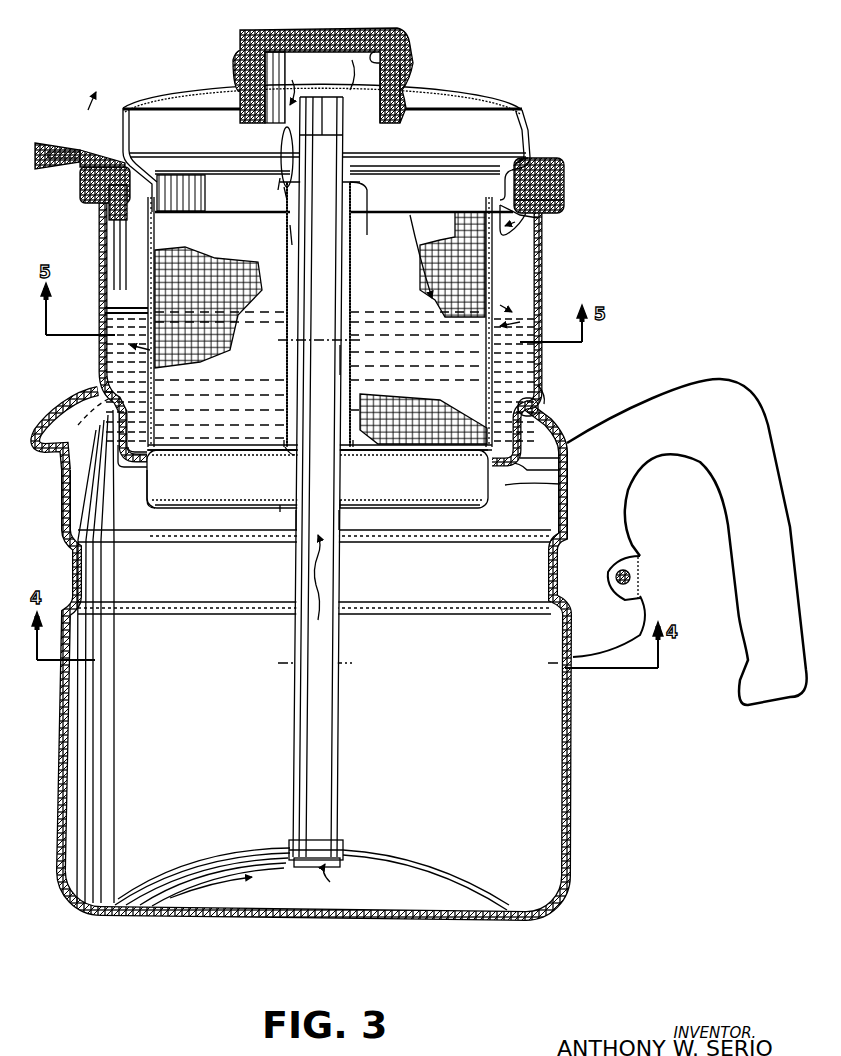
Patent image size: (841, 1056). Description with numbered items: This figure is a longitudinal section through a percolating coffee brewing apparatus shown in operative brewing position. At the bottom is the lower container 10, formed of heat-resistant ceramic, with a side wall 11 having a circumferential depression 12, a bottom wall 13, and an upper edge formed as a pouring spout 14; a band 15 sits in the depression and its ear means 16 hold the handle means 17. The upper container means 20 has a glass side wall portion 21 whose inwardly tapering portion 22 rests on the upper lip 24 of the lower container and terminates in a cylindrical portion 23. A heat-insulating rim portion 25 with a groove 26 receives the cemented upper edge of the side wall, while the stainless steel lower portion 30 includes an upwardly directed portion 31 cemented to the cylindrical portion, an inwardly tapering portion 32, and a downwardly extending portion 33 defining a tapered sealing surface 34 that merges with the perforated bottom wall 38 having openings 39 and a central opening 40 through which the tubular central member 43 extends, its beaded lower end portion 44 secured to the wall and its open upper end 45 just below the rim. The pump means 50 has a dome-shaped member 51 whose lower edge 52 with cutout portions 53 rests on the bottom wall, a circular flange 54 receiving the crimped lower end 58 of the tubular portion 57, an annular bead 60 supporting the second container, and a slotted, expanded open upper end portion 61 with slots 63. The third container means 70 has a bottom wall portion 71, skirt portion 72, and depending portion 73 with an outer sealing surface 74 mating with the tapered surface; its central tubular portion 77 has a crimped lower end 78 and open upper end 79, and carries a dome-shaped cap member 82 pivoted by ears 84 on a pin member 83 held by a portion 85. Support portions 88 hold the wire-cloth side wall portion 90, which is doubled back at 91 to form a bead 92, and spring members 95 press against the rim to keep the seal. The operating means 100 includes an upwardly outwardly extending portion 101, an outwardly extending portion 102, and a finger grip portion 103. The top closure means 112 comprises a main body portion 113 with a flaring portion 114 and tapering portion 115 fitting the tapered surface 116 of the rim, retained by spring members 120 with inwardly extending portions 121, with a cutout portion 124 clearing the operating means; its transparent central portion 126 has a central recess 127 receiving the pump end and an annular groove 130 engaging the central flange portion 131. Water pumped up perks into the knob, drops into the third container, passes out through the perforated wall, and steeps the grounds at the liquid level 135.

The lower container 10 is at (580, 805).
The side wall 11 is at (572, 726).
The circumferential depression 12 is at (548, 572).
The bottom wall 13 is at (208, 918).
The pouring spout 14 is at (52, 422).
The band 15 is at (78, 575).
The ear means 16 is at (616, 562).
The handle means 17 is at (722, 398).
The upper container means 20 is at (552, 258).
The side wall portion 21 is at (546, 310).
The inwardly tapering portion 22 is at (541, 405).
The cylindrical portion 23 is at (462, 412).
The upper lip 24 is at (539, 388).
The rim portion 25 is at (568, 183).
The circumferentially extending groove 26 is at (563, 206).
The lower portion 30 is at (512, 488).
The upwardly directed portion 31 is at (527, 463).
The inwardly tapering portion 32 is at (535, 481).
The downwardly extending portion 33 is at (490, 513).
The sealing surface 34 is at (192, 496).
The bottom wall 38 is at (398, 510).
The openings 39 is at (465, 504).
The central opening 40 is at (352, 498).
The tubular central member 43 is at (288, 451).
The lower end portion 44 is at (280, 512).
The open upper end 45 is at (370, 170).
The pump means 50 is at (352, 755).
The dome-shaped member 51 is at (210, 870).
The lower edge 52 is at (135, 912).
The cutout portions 53 is at (332, 894).
The circular flange 54 is at (345, 845).
The tubular portion 57 is at (296, 690).
The lower end 58 is at (292, 845).
The annular bead 60 is at (342, 522).
The open upper end portion 61 is at (320, 95).
The slots 63 is at (343, 128).
The third container means 70 is at (505, 272).
The bottom wall portion 71 is at (414, 452).
The skirt portion 72 is at (163, 457).
The depending portion 73 is at (158, 466).
The outer sealing surface 74 is at (150, 472).
The central tubular portion 77 is at (344, 358).
The lower end 78 is at (345, 450).
The open upper end 79 is at (368, 188).
The dome-shaped cap member 82 is at (282, 140).
The pin member 83 is at (287, 196).
The ears 84 is at (276, 186).
The portion 85 is at (292, 240).
The support portions 88 is at (163, 268).
The side wall portion 90 is at (476, 222).
The doubled back portion 91 is at (412, 218).
The bead 92 is at (495, 168).
The spring members 95 is at (112, 220).
The operating means 100 is at (92, 108).
The upwardly outwardly extending portion 101 is at (140, 170).
The outwardly extending portion 102 is at (62, 150).
The finger grip portion 103 is at (42, 170).
The top closure means 112 is at (478, 92).
The main body portion 113 is at (518, 110).
The downwardly and outwardly flaring portion 114 is at (533, 135).
The inwardly extending and tapering portion 115 is at (532, 152).
The downwardly tapered surface 116 is at (545, 160).
The spring members 120 is at (500, 205).
The inwardly extending portion 121 is at (540, 222).
The cutout portion 124 is at (122, 108).
The central portion 126 is at (405, 35).
The central recess 127 is at (385, 62).
The annular groove 130 is at (240, 82).
The central flange portion 131 is at (418, 100).
The liquid level 135 is at (118, 302).